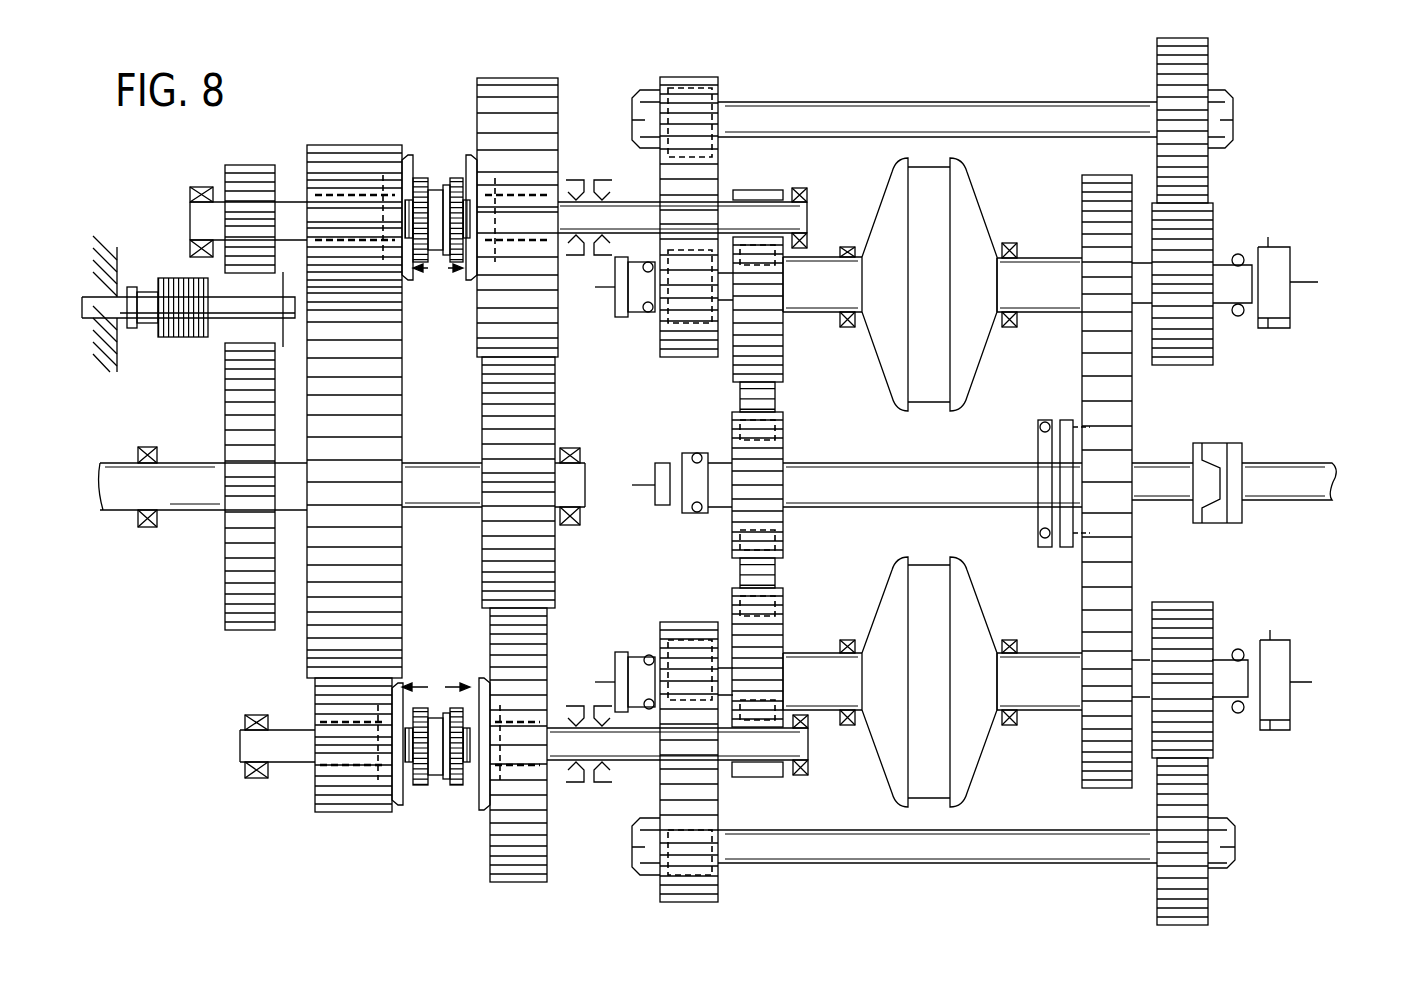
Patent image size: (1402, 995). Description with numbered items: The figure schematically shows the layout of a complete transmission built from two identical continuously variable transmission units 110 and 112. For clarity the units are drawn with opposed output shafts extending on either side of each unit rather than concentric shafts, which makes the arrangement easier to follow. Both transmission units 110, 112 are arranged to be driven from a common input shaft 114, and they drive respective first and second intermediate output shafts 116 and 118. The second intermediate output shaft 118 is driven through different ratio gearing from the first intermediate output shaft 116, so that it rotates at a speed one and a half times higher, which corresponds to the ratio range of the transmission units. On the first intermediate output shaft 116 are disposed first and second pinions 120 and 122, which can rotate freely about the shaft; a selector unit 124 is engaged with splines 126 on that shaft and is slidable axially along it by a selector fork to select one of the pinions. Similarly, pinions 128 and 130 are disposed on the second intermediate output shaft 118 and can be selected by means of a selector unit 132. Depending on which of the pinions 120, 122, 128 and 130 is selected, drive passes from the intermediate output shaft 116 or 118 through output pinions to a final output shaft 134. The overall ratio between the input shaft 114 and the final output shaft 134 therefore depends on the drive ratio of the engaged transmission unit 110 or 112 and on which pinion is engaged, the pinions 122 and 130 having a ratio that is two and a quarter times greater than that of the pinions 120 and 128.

The first continuously variable transmission unit 110 is at (888, 380).
The second continuously variable transmission unit 112 is at (893, 777).
The common input shaft 114 is at (1165, 483).
The first intermediate output shaft 116 is at (642, 212).
The second intermediate output shaft 118 is at (640, 745).
The first pinion 120 is at (343, 153).
The second pinion 122 is at (523, 93).
The selector unit 124 is at (445, 260).
The splines 126 is at (418, 197).
The pinion 128 is at (338, 800).
The pinion 130 is at (505, 848).
The selector unit 132 is at (437, 780).
The final output shaft 134 is at (122, 512).